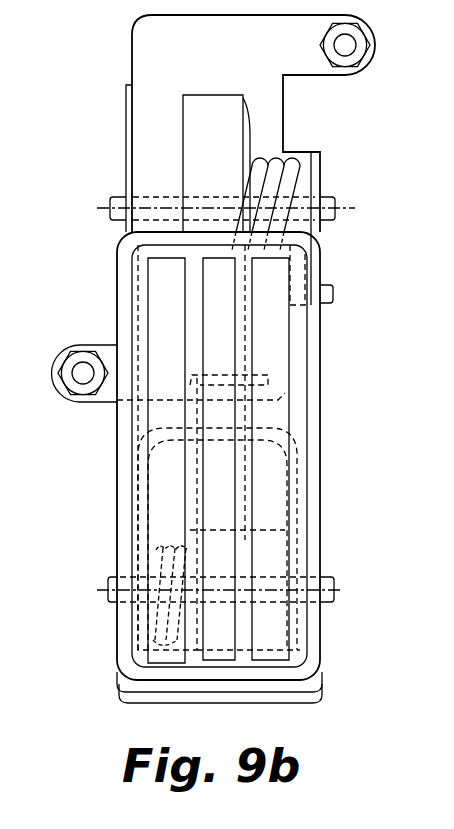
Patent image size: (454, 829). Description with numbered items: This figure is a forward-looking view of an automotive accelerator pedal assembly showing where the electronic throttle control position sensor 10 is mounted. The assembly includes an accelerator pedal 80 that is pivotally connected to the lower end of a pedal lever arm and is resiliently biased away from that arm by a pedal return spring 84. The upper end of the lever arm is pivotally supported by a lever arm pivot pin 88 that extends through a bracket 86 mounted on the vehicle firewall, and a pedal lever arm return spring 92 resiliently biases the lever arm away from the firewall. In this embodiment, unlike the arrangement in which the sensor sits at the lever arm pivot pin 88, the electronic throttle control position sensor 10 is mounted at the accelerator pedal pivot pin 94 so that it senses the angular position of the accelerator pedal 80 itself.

The electronic throttle control position sensor 10 is at (272, 512).
The accelerator pedal 80 is at (117, 285).
The pedal return spring 84 is at (138, 625).
The bracket 86 is at (126, 132).
The lever arm pivot pin 88 is at (335, 212).
The pedal lever arm return spring 92 is at (318, 178).
The accelerator pedal pivot pin 94 is at (335, 590).